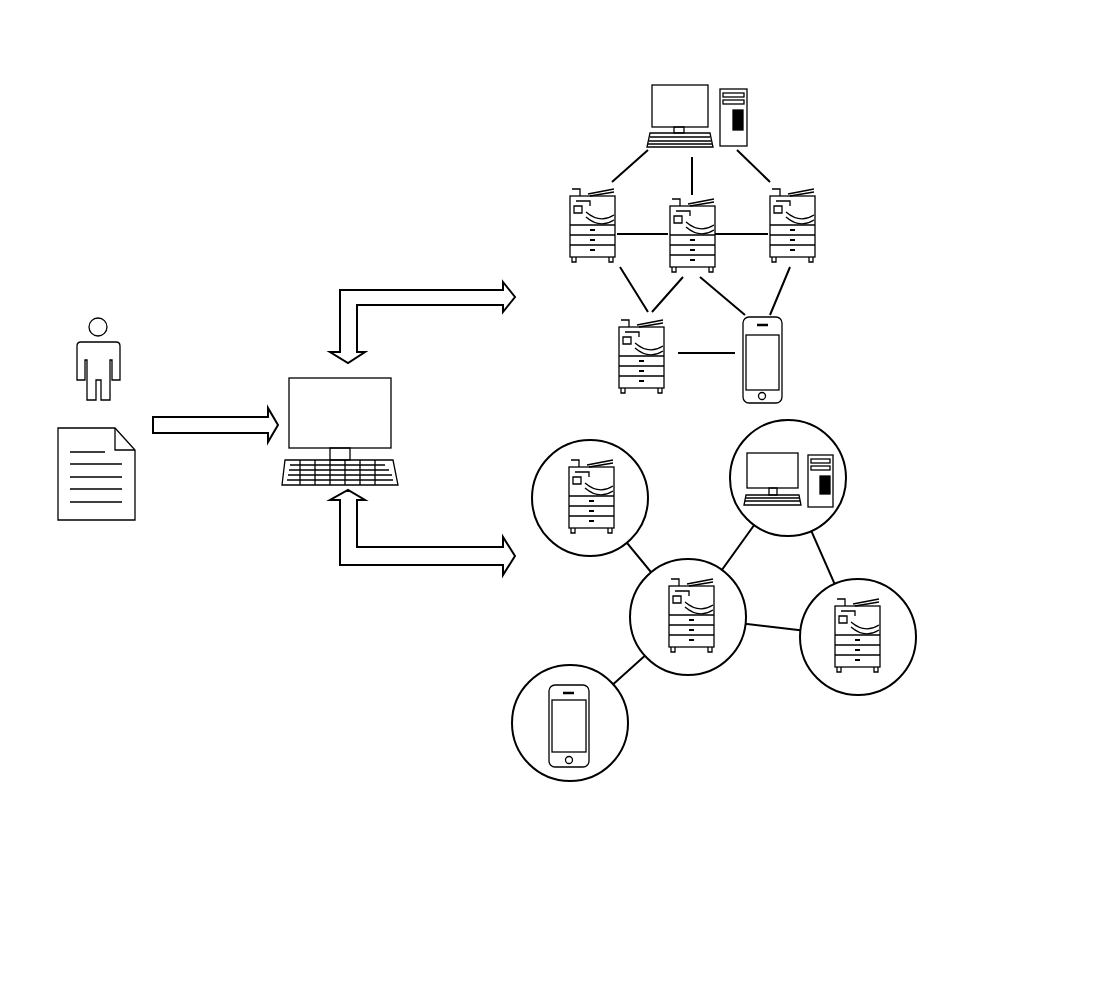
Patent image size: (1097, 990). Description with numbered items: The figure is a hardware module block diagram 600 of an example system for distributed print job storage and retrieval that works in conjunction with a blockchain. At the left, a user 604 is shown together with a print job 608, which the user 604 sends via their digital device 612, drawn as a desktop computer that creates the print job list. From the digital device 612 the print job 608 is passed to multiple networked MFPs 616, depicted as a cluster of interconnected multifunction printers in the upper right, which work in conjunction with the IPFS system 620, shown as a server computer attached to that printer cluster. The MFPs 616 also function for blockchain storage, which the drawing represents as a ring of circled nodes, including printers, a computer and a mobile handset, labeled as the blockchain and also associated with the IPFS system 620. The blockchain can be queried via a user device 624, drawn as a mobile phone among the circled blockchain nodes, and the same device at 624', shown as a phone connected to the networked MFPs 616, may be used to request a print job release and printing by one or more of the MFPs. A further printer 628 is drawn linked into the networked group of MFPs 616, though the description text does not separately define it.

The hardware module block diagram 600 is at (880, 90).
The user 604 is at (120, 360).
The print job 608 is at (95, 520).
The digital device 612 is at (398, 472).
The networked MFPs 616 is at (747, 304).
The IPFS system 620 is at (748, 118).
The user device 624 is at (633, 734).
The user device 624' is at (812, 360).
The printer (IPFS node) 628 is at (647, 397).